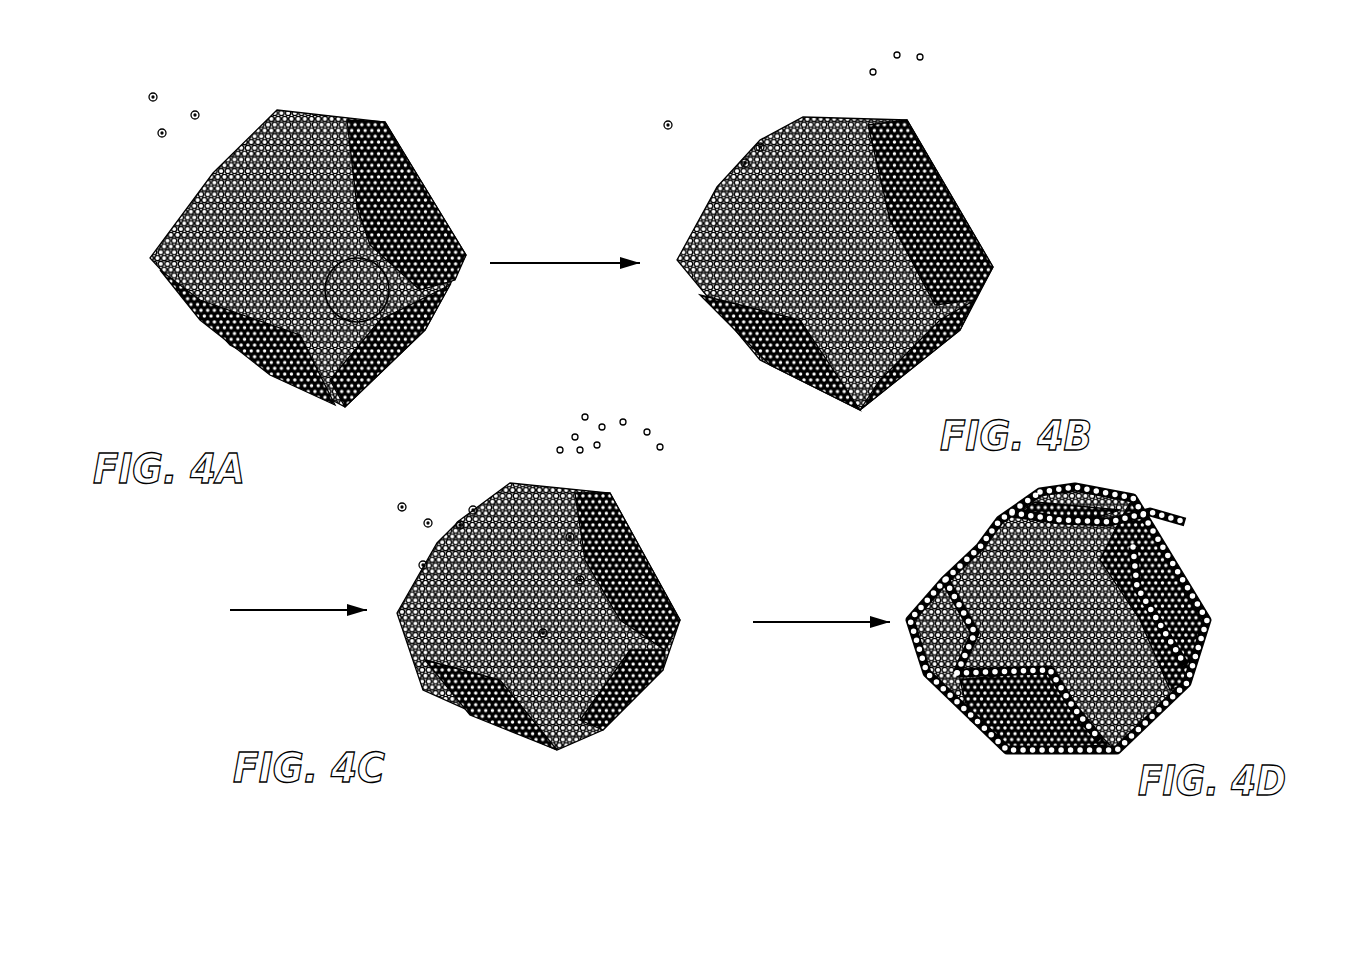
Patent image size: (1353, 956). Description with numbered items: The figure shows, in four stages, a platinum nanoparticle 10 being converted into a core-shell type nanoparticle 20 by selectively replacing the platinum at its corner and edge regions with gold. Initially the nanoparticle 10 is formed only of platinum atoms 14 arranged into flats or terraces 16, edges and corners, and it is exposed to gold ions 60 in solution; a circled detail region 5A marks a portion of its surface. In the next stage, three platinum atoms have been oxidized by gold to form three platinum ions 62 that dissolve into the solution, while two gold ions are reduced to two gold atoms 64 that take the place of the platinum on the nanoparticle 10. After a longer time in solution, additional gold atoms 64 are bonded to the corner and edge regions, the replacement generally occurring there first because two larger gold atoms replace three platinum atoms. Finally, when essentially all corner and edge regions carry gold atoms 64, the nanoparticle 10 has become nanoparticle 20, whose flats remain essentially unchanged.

In FIG. 4A, the nanoparticle 10 is at (310, 230).
In FIG. 4A, the platinum atoms 14 is at (440, 188).
In FIG. 4B, the platinum atoms 14 is at (835, 263).
In FIG. 4C, the platinum atoms 14 is at (538, 616).
In FIG. 4D, the platinum atoms 14 is at (1153, 530).
In FIG. 4A, the terraces 16 is at (195, 268).
In FIG. 4A, the detail region shown in FIG. 5A is at (437, 317).
In FIG. 4A, the gold ions 60 is at (150, 102).
In FIG. 4B, the gold ions 60 is at (666, 121).
In FIG. 4C, the gold ions 60 is at (424, 523).
In FIG. 4B, the platinum ions 62 is at (918, 55).
In FIG. 4C, the platinum ions 62 is at (603, 424).
In FIG. 4B, the gold atoms 64 is at (742, 163).
In FIG. 4C, the gold atoms 64 is at (461, 521).
In FIG. 4D, the gold atoms 64 is at (1052, 598).
In FIG. 4D, the nanoparticle 20 is at (1086, 598).